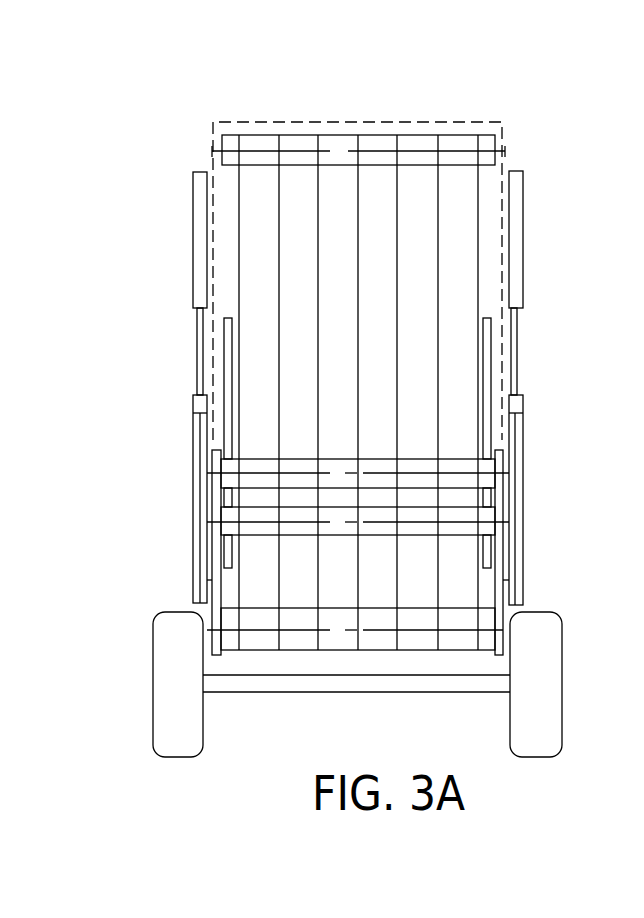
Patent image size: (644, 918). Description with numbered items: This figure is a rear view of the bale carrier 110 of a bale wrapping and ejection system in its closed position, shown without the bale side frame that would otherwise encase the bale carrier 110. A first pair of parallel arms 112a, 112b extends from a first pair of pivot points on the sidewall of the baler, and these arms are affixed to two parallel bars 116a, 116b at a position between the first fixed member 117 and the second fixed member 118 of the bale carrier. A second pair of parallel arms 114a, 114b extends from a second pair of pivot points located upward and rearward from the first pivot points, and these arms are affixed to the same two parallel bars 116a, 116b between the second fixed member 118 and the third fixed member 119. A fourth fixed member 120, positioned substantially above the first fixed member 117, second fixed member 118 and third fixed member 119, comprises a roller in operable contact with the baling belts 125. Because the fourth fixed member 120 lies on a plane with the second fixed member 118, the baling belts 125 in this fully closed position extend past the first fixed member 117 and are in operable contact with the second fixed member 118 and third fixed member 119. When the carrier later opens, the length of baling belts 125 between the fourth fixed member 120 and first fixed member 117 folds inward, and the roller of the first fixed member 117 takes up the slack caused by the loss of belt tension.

The bale carrier 110 is at (332, 97).
The fourth fixed member 120 is at (485, 140).
The baling belts 125 is at (478, 207).
The first fixed member 117 is at (450, 465).
The parallel bar 116a is at (213, 450).
The parallel bar 116b is at (500, 448).
The first parallel arm 112a is at (207, 488).
The first parallel arm 112b is at (523, 487).
The second parallel arm 114a is at (200, 573).
The second parallel arm 114b is at (515, 535).
The second fixed member 118 is at (482, 528).
The third fixed member 119 is at (232, 640).